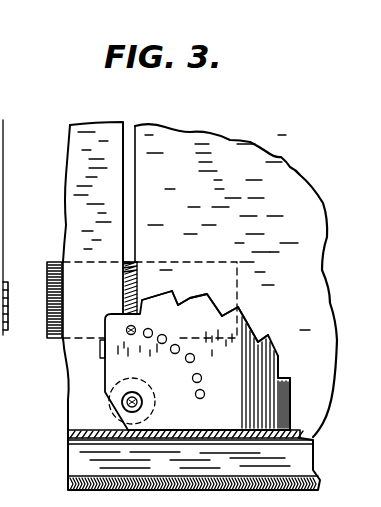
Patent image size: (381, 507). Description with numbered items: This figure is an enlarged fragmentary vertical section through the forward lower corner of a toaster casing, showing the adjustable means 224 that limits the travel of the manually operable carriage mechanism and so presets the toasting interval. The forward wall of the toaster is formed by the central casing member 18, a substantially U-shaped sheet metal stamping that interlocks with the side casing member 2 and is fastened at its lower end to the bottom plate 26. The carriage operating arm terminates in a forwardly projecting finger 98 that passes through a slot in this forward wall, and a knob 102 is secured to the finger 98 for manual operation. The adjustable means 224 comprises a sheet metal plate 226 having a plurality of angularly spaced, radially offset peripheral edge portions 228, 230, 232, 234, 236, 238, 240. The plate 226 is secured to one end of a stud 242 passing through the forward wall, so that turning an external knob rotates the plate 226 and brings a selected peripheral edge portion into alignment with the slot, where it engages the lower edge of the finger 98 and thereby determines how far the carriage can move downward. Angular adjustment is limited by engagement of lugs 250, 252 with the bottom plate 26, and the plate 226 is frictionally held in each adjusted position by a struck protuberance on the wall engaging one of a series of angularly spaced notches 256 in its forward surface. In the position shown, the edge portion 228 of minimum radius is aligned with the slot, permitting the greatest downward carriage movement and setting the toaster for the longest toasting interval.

The casing member 2 is at (3, 119).
The central casing member 18 is at (281, 155).
The finger 98 is at (119, 279).
The peripheral edge portion 228 is at (122, 318).
The knob 102 is at (50, 332).
The adjustable means 224 is at (226, 297).
The plate 226 is at (115, 363).
The lug 252 is at (100, 352).
The peripheral edge portion 230 is at (148, 295).
The peripheral edge portion 232 is at (184, 292).
The peripheral edge portion 234 is at (209, 297).
The peripheral edge portion 236 is at (240, 313).
The peripheral edge portion 238 is at (265, 346).
The peripheral edge portion 240 is at (292, 390).
The stud 242 is at (124, 402).
The notches 256 is at (153, 334).
The bottom plate 26 is at (83, 438).
The lug 250 is at (183, 433).